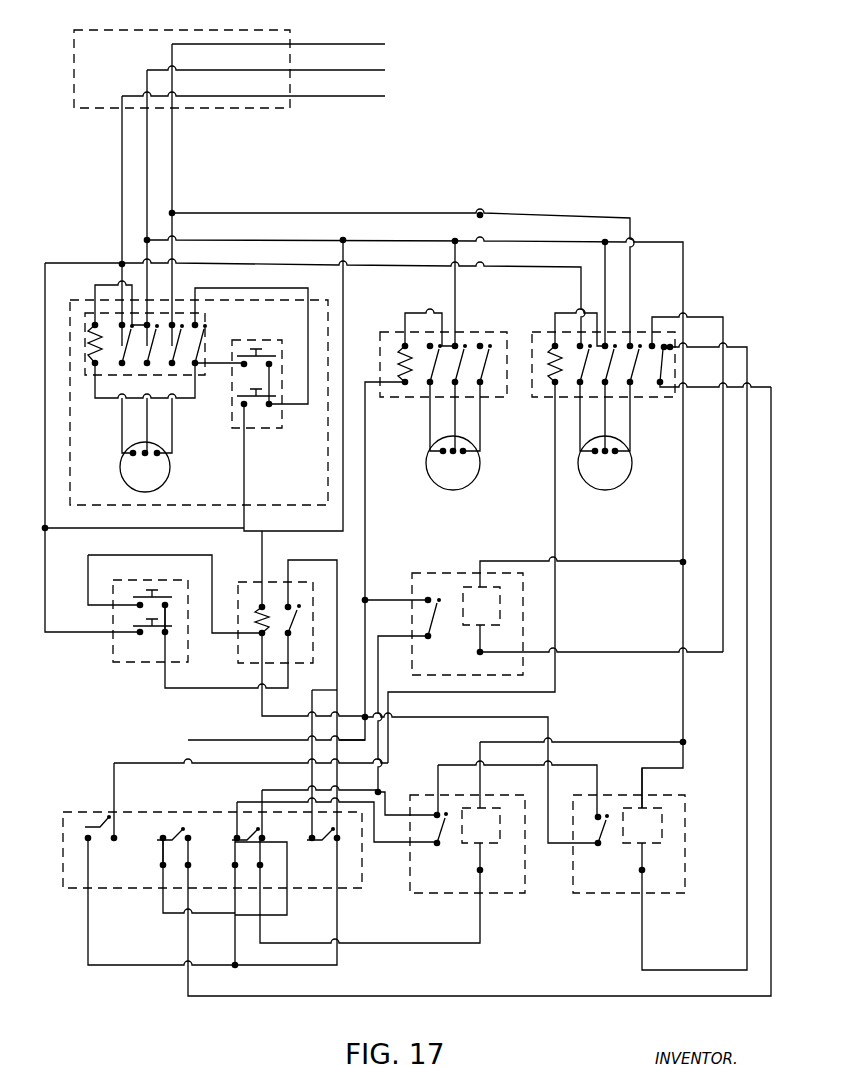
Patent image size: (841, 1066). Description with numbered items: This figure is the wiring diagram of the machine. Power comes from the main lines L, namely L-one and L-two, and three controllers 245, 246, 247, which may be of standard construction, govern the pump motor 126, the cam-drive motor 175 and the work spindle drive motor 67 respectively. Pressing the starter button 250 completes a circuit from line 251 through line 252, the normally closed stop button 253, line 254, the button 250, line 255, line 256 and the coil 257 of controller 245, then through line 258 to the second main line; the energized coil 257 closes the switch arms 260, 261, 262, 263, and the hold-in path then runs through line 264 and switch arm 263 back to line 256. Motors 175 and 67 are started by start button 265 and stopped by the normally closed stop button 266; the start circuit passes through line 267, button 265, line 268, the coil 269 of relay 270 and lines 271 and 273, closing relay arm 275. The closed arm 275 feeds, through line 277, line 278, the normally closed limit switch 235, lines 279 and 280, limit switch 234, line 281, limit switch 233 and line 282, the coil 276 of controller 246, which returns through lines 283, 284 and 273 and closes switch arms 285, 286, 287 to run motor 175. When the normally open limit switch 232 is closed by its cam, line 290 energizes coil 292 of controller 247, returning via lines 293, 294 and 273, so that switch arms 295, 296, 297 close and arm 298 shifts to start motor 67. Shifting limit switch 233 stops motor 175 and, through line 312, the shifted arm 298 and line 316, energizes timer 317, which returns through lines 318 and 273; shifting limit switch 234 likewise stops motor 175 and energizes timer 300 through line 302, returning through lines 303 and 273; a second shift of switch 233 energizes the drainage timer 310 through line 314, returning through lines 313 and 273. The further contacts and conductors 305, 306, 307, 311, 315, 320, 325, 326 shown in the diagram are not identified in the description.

The main lines L is at (241, 188).
The line 273 is at (275, 240).
The line 251 is at (82, 262).
The line 258 is at (101, 285).
The coil 257 is at (100, 333).
The switch arm 260 is at (138, 343).
The switch arm 261 is at (163, 343).
The switch arm 262 is at (188, 343).
The switch arm 263 is at (206, 330).
The line 264 is at (267, 288).
The starter button 250 is at (255, 348).
The line 255 is at (236, 357).
The controller 245 is at (202, 374).
The stop button 253 is at (256, 410).
The line 254 is at (270, 384).
The line 252 is at (244, 531).
The line 256 is at (181, 398).
The pump motor 126 is at (164, 475).
The line 283 is at (417, 313).
The coil 276 is at (390, 357).
The line 284 is at (456, 316).
The controller 246 is at (492, 397).
The switch arm 285 is at (446, 363).
The switch arm 286 is at (472, 363).
The switch arm 287 is at (486, 362).
The cam-drive motor 175 is at (454, 475).
The line 293 is at (579, 313).
The coil 292 is at (548, 342).
The line 294 is at (604, 270).
The controller 247 is at (642, 397).
The switch arm 295 is at (592, 363).
The switch arm 296 is at (618, 363).
The switch arm 297 is at (636, 362).
The switch arm 298 is at (664, 366).
The work spindle drive motor 67 is at (619, 476).
The line 316 is at (723, 328).
The line 314 is at (747, 378).
The line 312 is at (170, 952).
The line 271 is at (264, 551).
The coil 269 is at (255, 612).
The relay 270 is at (256, 582).
The arm 275 is at (299, 616).
The line 278 is at (315, 552).
The line 277 is at (192, 688).
The line 268 is at (88, 582).
The start button 265 is at (152, 590).
The stop button 266 is at (158, 640).
The line 267 is at (168, 612).
The line 282 is at (365, 543).
The conductor 326 is at (380, 600).
The relay contact 320 is at (432, 624).
The timer 317 is at (476, 638).
The conductor 325 is at (378, 644).
The line 290 is at (560, 551).
The line 318 is at (624, 562).
The line 303 is at (604, 742).
The conductor 311 is at (576, 768).
The line 313 is at (683, 765).
The conductor 307 is at (262, 790).
The conductor 306 is at (382, 845).
The limit switch 232 is at (98, 825).
The limit switch 233 is at (170, 838).
The limit switch 234 is at (245, 838).
The limit switch 235 is at (326, 841).
The line 281 is at (163, 900).
The line 280 is at (212, 901).
The line 279 is at (152, 965).
The line 302 is at (270, 943).
The timer 300 is at (490, 893).
The relay contact 305 is at (442, 846).
The timer 310 is at (665, 893).
The relay contact 315 is at (602, 846).